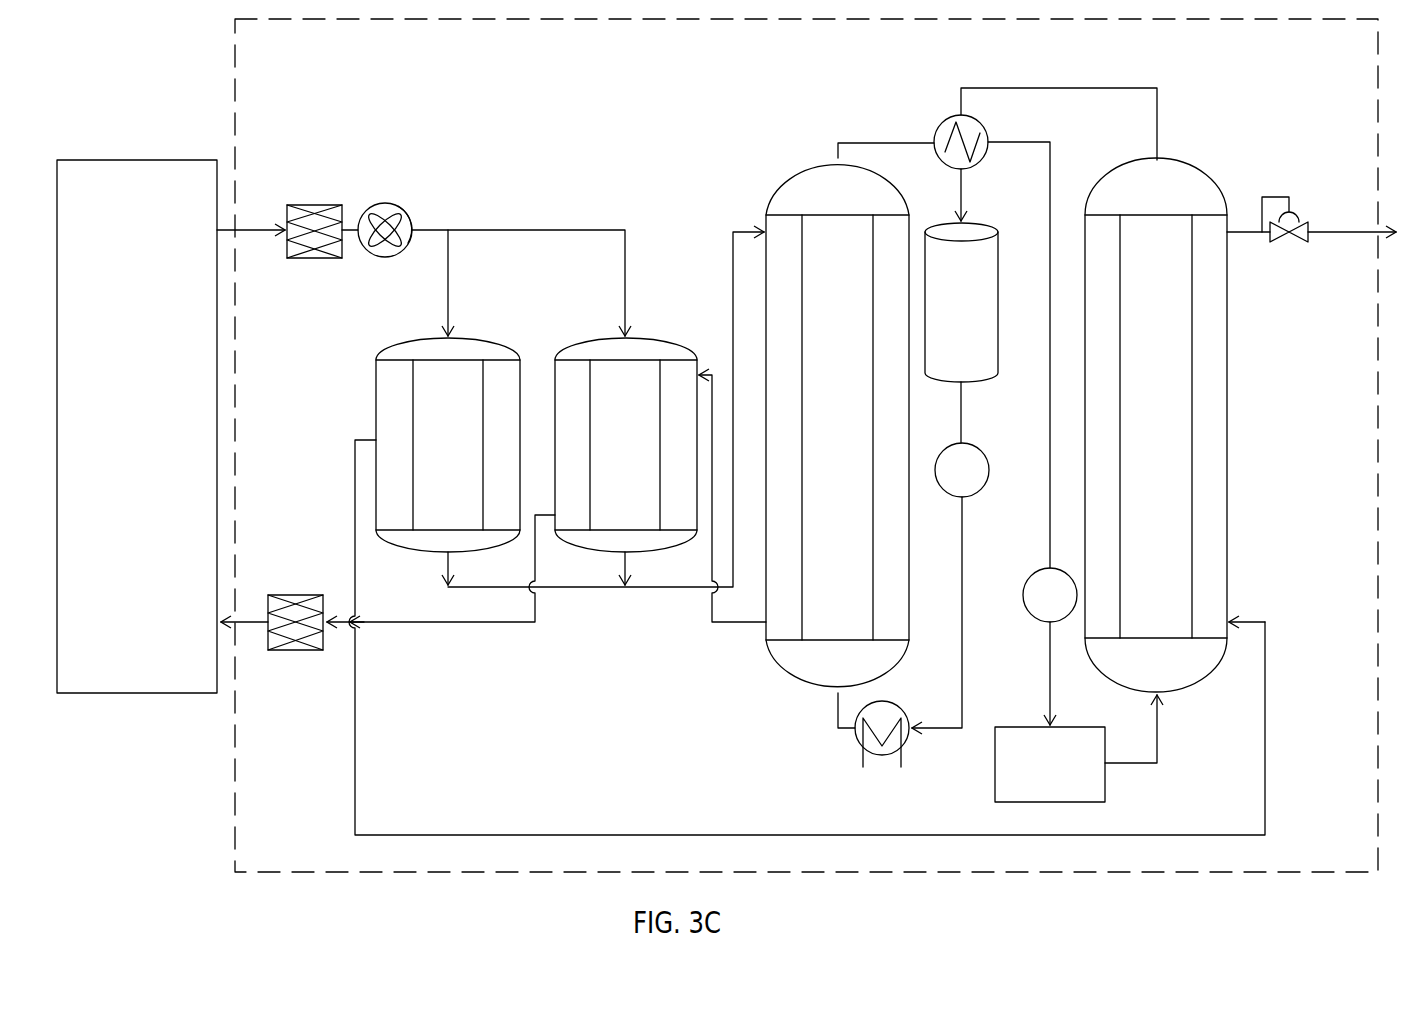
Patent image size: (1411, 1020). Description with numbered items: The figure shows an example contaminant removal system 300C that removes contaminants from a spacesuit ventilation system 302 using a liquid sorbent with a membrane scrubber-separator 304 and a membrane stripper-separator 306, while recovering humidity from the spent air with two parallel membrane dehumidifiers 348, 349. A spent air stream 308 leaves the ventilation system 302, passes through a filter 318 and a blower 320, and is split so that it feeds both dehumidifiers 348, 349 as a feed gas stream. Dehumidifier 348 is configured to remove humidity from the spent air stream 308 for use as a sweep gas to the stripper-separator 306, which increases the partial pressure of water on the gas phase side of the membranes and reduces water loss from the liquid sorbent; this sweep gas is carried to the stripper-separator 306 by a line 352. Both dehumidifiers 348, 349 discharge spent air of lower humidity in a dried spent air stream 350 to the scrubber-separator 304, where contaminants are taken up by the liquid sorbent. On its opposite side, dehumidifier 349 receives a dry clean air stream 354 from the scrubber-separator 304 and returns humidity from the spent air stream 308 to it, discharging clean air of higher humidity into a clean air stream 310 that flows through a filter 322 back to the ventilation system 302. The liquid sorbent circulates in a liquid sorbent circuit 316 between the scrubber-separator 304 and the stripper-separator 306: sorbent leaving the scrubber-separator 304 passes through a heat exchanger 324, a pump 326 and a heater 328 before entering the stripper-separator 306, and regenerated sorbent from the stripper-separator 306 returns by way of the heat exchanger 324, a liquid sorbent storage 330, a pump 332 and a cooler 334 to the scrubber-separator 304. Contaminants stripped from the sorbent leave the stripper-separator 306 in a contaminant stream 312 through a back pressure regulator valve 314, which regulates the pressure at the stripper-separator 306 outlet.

The contaminant removal system 300C is at (1325, 80).
The ventilation system 302 is at (122, 465).
The scrubber-separator 304 is at (821, 437).
The stripper-separator 306 is at (1140, 437).
The spent air stream 308 is at (270, 233).
The clean air stream 310 is at (253, 624).
The contaminant stream 312 is at (1242, 231).
The back pressure regulator valve 314 is at (1297, 214).
The liquid sorbent circuit 316 is at (1193, 126).
The filter 318 is at (302, 205).
The blower 320 is at (392, 205).
The filter 322 is at (280, 595).
The heat exchanger 324 is at (984, 126).
The pump 326 is at (1033, 606).
The heater 328 is at (1033, 790).
The liquid sorbent storage 330 is at (944, 310).
The pump 332 is at (945, 481).
The cooler 334 is at (895, 705).
The membrane dehumidifier 348 is at (431, 455).
The membrane dehumidifier 349 is at (608, 455).
The dried spent air stream 350 is at (733, 270).
The recycle line 352 is at (1240, 618).
The dry clean air stream 354 is at (733, 624).